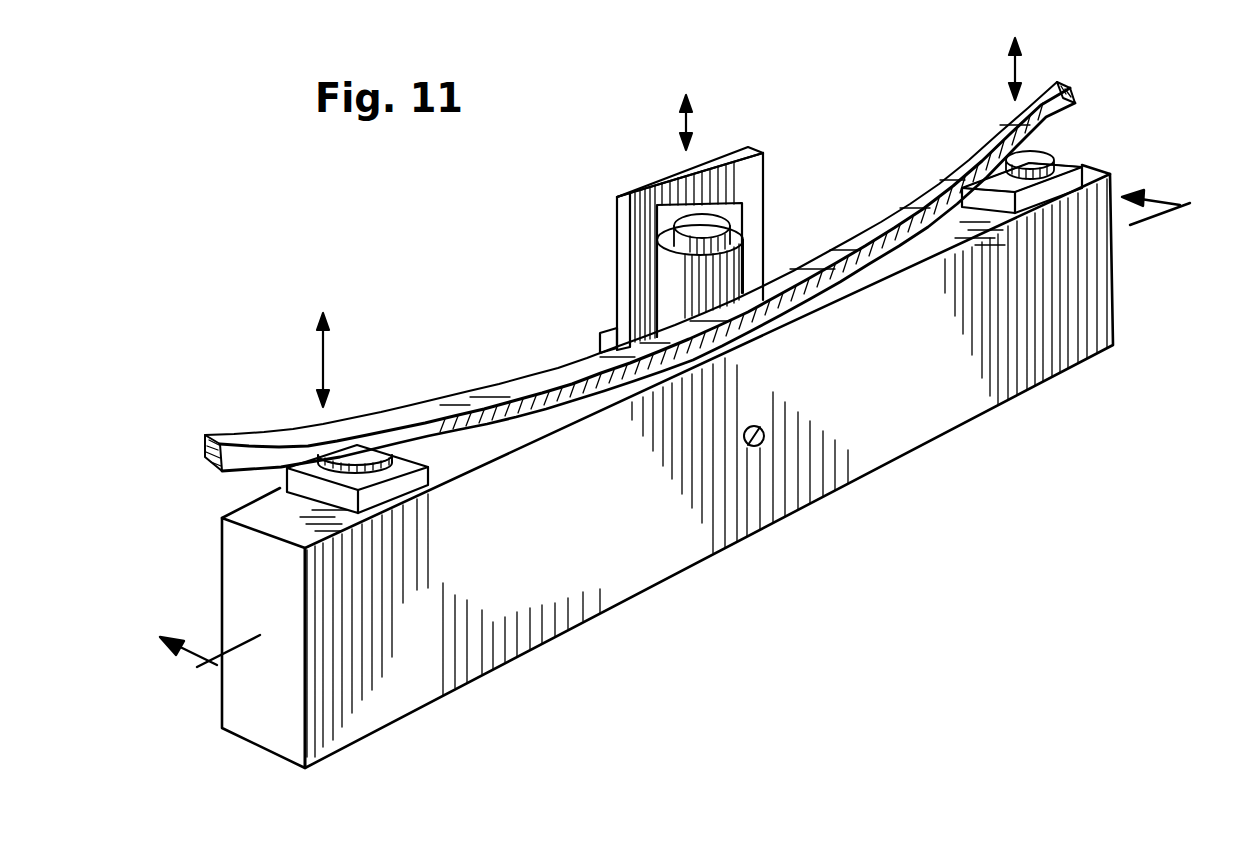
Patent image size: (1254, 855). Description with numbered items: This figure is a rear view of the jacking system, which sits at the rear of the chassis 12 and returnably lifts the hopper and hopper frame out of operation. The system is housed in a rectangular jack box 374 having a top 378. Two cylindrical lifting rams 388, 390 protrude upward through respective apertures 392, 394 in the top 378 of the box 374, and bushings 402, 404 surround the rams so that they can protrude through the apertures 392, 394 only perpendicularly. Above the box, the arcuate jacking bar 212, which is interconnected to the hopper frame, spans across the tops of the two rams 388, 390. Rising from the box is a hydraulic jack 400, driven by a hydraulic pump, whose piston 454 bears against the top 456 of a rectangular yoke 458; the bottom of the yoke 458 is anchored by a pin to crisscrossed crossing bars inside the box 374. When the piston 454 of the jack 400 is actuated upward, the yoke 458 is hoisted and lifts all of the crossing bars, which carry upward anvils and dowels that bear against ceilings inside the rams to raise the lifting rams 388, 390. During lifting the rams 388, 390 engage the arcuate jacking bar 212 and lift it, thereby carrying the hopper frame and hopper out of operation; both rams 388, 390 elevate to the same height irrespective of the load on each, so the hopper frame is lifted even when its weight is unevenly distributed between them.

The arcuate jacking bar 212 is at (463, 410).
The jack box 374 is at (683, 540).
The top of the jack box 378 is at (482, 450).
The lifting ram 388 is at (375, 457).
The lifting ram 390 is at (1021, 158).
The aperture 392 is at (333, 460).
The aperture 394 is at (1062, 160).
The hydraulic jack 400 is at (742, 275).
The bushing 402 is at (403, 493).
The bushing 404 is at (1063, 193).
The piston 454 is at (742, 212).
The top of the rectangular yoke 456 is at (640, 190).
The rectangular yoke 458 is at (617, 257).
The chassis 12 is at (672, 428).